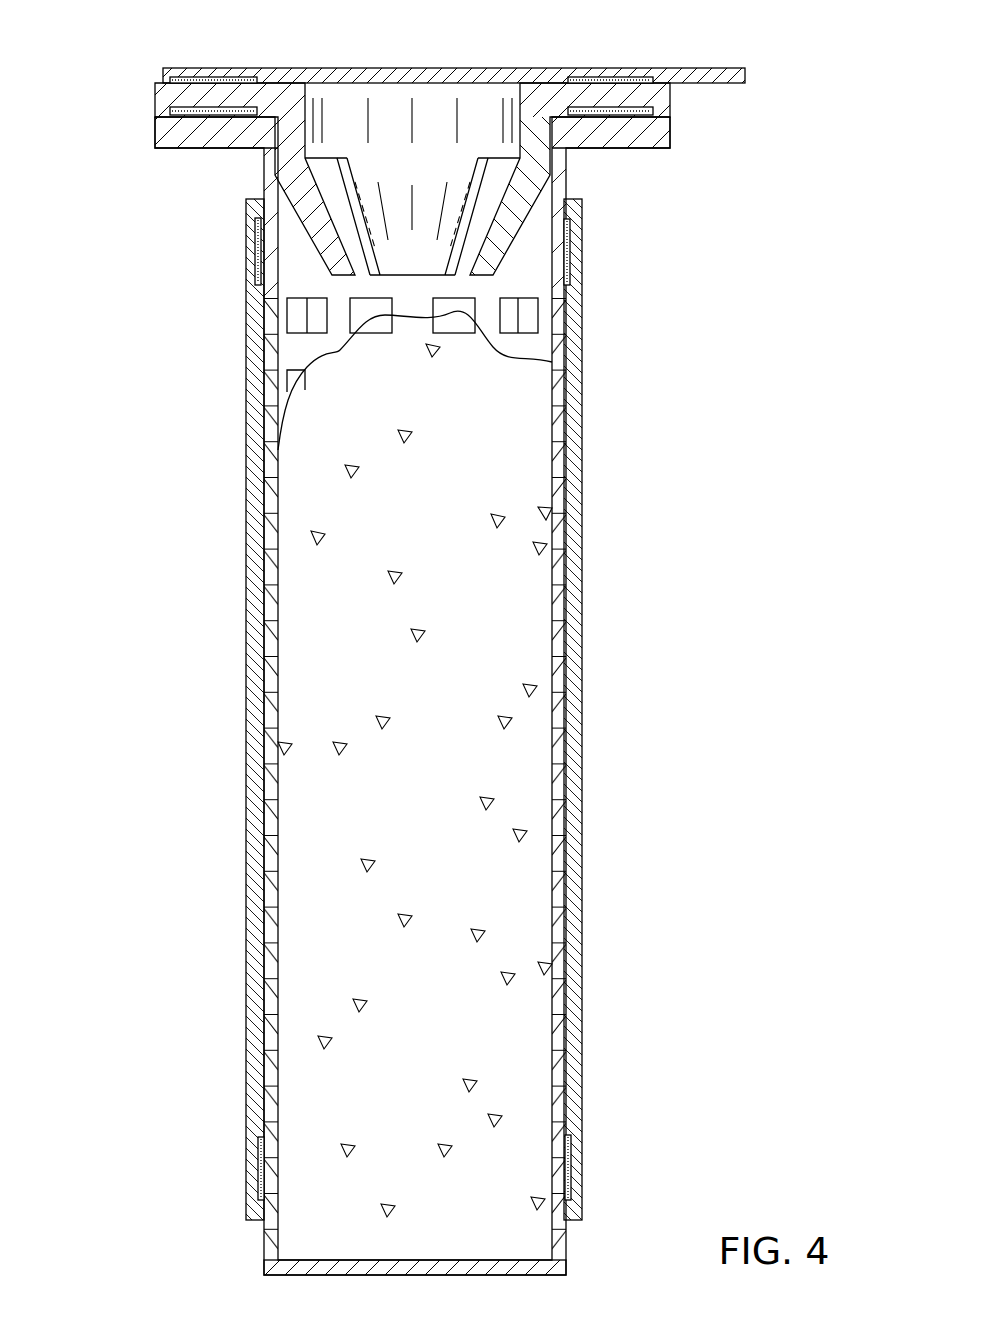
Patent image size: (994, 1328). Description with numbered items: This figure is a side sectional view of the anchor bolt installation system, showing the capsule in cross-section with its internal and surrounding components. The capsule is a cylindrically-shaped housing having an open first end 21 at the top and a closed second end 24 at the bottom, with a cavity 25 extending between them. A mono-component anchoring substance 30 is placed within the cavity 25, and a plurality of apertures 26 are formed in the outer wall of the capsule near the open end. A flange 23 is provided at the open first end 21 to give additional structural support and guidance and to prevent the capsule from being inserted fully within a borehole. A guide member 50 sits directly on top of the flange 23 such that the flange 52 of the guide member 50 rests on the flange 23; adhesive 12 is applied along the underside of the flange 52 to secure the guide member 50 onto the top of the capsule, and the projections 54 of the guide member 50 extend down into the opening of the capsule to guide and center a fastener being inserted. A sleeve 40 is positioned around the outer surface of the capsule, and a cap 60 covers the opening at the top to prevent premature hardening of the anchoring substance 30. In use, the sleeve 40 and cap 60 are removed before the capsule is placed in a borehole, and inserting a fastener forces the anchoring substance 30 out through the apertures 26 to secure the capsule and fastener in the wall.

The adhesive 12 is at (200, 78).
The first end 21 is at (265, 178).
The flange 23 is at (643, 140).
The second end 24 is at (267, 1252).
The cavity 25 is at (528, 345).
The apertures 26 is at (298, 317).
The anchoring substance 30 is at (350, 720).
The sleeve 40 is at (583, 648).
The guide member 50 is at (470, 128).
The flange of the guide member 52 is at (223, 98).
The projections 54 is at (505, 248).
The cap 60 is at (362, 68).